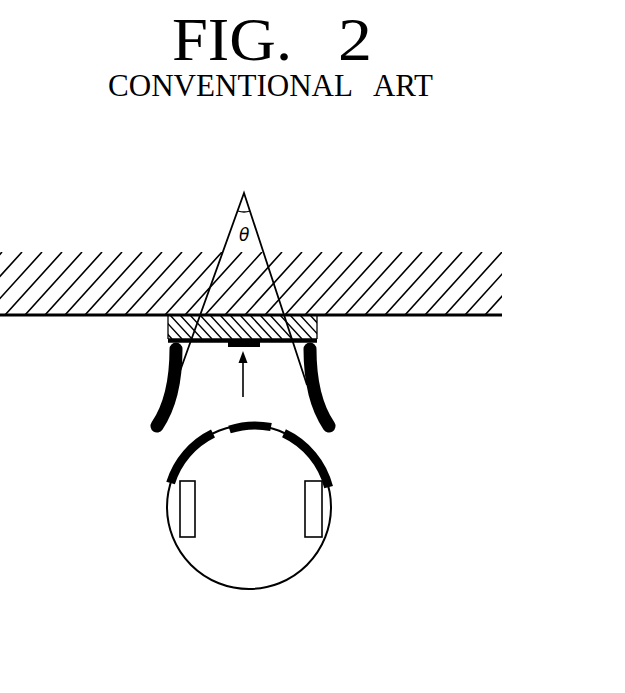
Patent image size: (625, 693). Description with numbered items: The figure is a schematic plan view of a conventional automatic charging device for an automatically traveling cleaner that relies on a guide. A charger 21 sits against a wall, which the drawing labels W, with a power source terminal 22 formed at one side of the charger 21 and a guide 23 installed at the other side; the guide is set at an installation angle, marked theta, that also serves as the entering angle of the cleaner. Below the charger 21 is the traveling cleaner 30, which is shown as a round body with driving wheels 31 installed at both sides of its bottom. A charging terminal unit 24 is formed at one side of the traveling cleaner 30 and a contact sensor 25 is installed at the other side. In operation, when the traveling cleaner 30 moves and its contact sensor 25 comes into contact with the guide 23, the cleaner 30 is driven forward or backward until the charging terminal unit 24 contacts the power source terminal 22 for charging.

The workpiece W is at (88, 277).
The charger 21 is at (318, 330).
The power source terminal 22 is at (262, 345).
The guide 23 is at (163, 382).
The charging terminal unit 24 is at (231, 426).
The contact sensor 25 is at (170, 478).
The traveling cleaner 30 is at (247, 578).
The driving wheels 31 is at (185, 522).